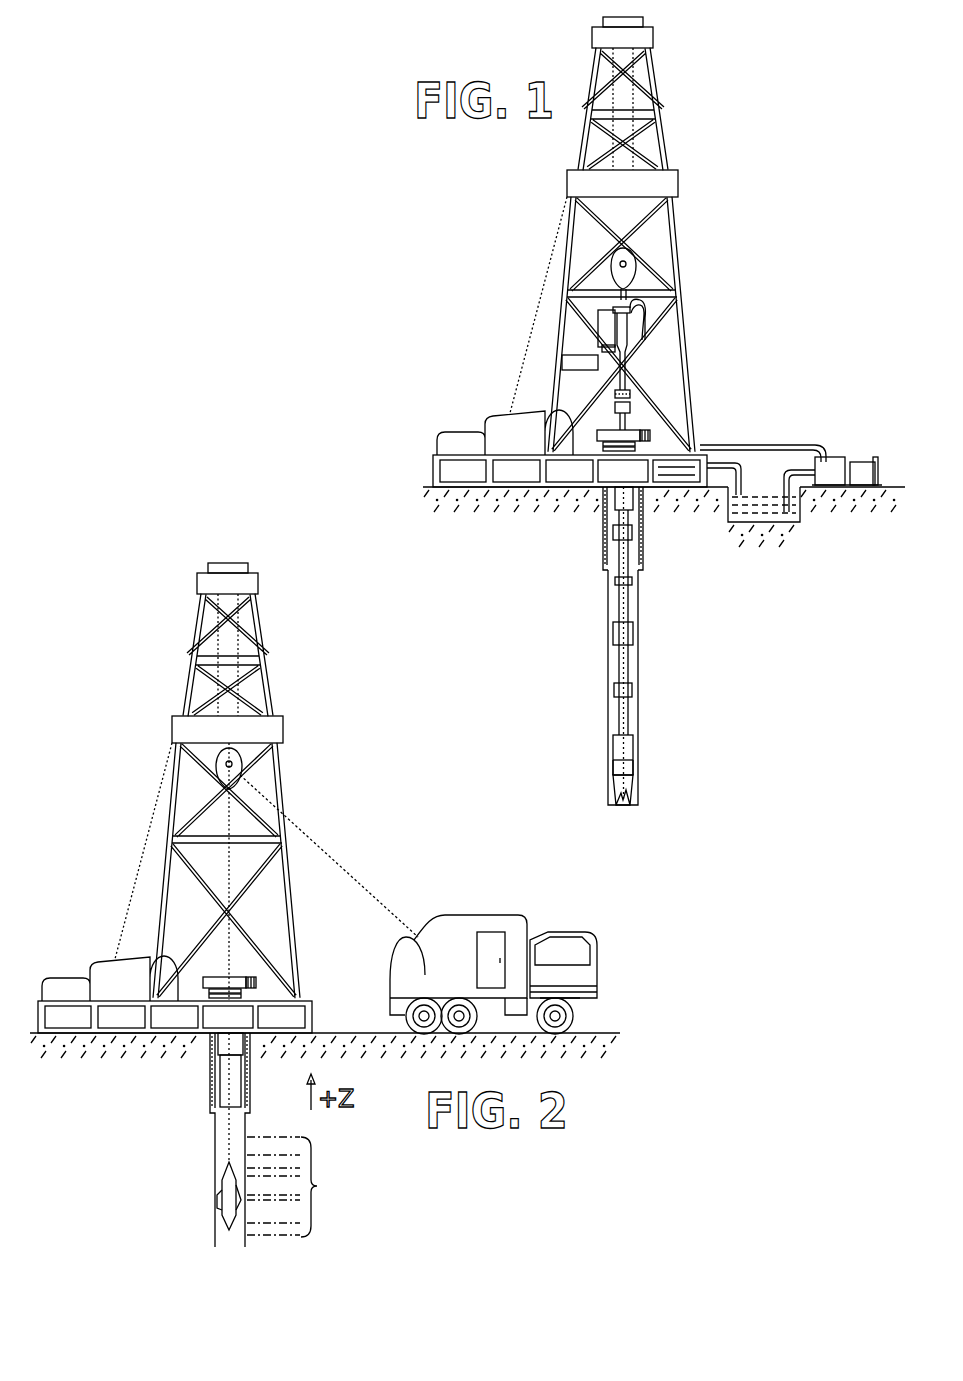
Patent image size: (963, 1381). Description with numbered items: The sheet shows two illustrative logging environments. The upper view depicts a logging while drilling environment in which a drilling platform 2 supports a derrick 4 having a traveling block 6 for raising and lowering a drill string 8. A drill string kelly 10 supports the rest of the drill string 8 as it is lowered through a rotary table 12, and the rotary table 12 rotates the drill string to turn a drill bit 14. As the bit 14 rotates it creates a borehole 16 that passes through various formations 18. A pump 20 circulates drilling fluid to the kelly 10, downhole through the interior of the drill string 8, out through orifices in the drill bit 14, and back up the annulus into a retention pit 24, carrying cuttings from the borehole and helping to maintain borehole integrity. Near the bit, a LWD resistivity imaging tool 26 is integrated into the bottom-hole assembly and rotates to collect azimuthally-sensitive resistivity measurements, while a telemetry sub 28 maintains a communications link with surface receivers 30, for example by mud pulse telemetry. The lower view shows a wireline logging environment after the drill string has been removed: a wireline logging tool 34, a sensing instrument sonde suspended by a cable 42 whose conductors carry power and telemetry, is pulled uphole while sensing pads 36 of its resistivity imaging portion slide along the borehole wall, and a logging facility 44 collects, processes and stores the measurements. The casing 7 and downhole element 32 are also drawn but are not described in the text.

In FIG. 1, the drilling platform 2 is at (437, 458).
In FIG. 2, the drilling platform 2 is at (313, 1014).
In FIG. 1, the derrick 4 is at (665, 146).
In FIG. 2, the derrick 4 is at (300, 968).
In FIG. 1, the traveling block 6 is at (636, 262).
In FIG. 2, the traveling block 6 is at (242, 763).
In FIG. 1, the casing 7 is at (612, 582).
In FIG. 1, the drill string 8 is at (630, 605).
In FIG. 1, the drill string kelly 10 is at (625, 328).
In FIG. 1, the rotary table 12 is at (640, 431).
In FIG. 2, the rotary table 12 is at (246, 978).
In FIG. 1, the drill bit 14 is at (630, 795).
In FIG. 1, the borehole 16 is at (828, 460).
In FIG. 1, the formations 18 is at (772, 445).
In FIG. 2, the formations 18 is at (284, 1140).
In FIG. 1, the pump 20 is at (638, 622).
In FIG. 1, the retention pit 24 is at (742, 515).
In FIG. 1, the LWD resistivity imaging tool 26 is at (615, 770).
In FIG. 1, the telemetry sub 28 is at (615, 753).
In FIG. 1, the surface receivers 30 is at (640, 398).
In FIG. 1, the downhole tool sub 32 is at (614, 640).
In FIG. 2, the wireline logging tool 34 is at (228, 1185).
In FIG. 2, the sensing pads 36 is at (218, 1207).
In FIG. 2, the cable 42 is at (300, 835).
In FIG. 2, the logging facility 44 is at (455, 916).